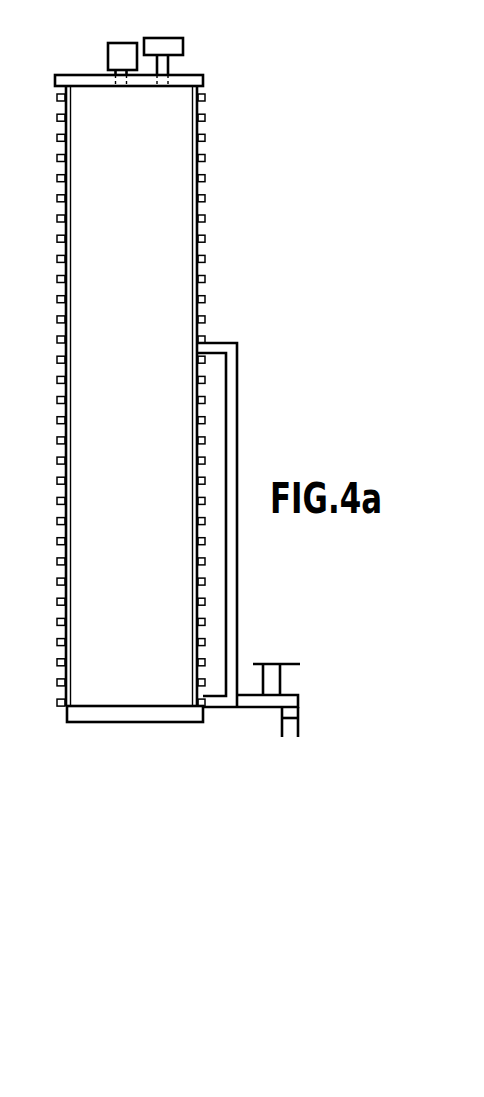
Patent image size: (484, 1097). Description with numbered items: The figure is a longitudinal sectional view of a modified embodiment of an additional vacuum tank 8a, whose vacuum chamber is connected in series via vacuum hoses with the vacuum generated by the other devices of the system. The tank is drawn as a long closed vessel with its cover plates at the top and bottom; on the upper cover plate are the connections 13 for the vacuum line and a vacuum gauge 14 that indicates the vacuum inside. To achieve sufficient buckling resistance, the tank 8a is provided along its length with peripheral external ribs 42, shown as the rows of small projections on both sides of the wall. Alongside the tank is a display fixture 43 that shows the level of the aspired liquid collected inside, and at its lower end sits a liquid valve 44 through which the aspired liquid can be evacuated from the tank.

The vacuum tank 8a is at (240, 289).
The connections for the vacuum line 13 is at (122, 57).
The vacuum gauge 14 is at (160, 48).
The peripheral external ribs 42 is at (204, 198).
The display fixture 43 is at (228, 375).
The liquid valve 44 is at (273, 680).